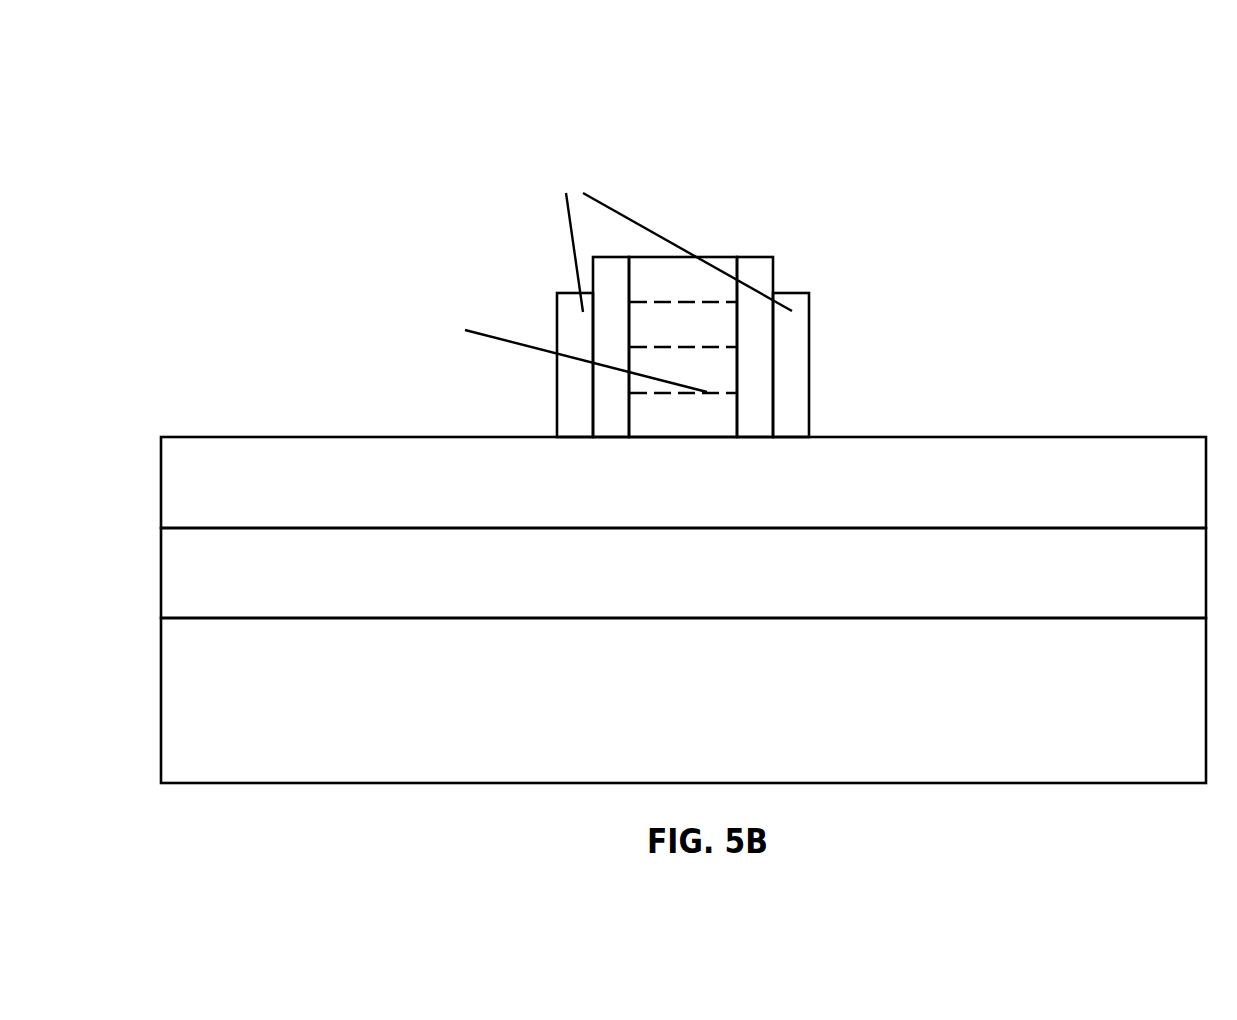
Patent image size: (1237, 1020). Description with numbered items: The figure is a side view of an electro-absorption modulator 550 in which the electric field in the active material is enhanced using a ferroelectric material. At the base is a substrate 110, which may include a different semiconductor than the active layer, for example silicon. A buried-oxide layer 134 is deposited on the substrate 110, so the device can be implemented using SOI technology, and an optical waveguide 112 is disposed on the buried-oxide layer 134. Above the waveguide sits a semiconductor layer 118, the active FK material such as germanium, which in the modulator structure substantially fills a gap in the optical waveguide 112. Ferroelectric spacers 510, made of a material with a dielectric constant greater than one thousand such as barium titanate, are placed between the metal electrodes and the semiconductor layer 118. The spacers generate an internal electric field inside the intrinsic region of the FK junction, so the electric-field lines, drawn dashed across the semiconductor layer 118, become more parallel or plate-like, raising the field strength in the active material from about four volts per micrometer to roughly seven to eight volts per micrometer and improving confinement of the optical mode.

The electro-absorption modulator 550 is at (784, 248).
The semiconductor layer 118 is at (763, 281).
The ferroelectric spacers 510 is at (610, 302).
The optical waveguide 112 is at (200, 506).
The buried-oxide layer 134 is at (698, 594).
The substrate 110 is at (699, 724).